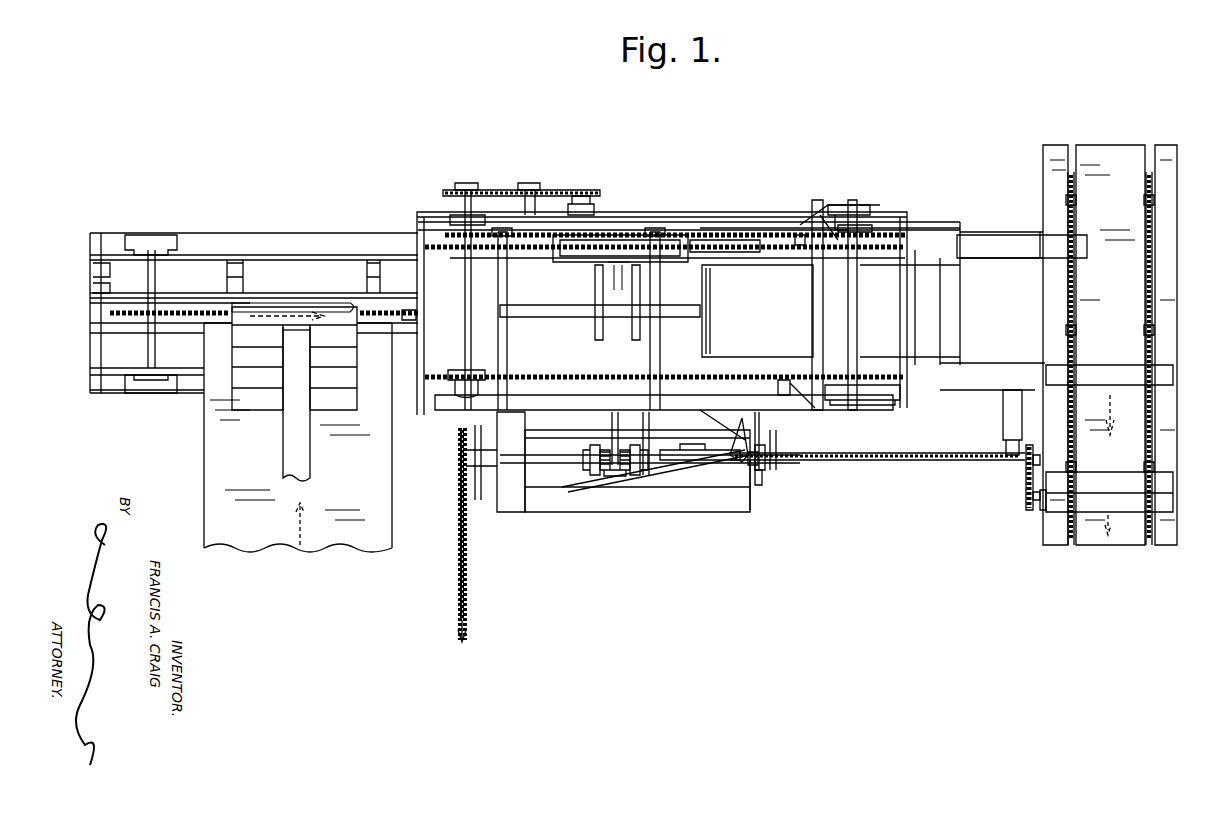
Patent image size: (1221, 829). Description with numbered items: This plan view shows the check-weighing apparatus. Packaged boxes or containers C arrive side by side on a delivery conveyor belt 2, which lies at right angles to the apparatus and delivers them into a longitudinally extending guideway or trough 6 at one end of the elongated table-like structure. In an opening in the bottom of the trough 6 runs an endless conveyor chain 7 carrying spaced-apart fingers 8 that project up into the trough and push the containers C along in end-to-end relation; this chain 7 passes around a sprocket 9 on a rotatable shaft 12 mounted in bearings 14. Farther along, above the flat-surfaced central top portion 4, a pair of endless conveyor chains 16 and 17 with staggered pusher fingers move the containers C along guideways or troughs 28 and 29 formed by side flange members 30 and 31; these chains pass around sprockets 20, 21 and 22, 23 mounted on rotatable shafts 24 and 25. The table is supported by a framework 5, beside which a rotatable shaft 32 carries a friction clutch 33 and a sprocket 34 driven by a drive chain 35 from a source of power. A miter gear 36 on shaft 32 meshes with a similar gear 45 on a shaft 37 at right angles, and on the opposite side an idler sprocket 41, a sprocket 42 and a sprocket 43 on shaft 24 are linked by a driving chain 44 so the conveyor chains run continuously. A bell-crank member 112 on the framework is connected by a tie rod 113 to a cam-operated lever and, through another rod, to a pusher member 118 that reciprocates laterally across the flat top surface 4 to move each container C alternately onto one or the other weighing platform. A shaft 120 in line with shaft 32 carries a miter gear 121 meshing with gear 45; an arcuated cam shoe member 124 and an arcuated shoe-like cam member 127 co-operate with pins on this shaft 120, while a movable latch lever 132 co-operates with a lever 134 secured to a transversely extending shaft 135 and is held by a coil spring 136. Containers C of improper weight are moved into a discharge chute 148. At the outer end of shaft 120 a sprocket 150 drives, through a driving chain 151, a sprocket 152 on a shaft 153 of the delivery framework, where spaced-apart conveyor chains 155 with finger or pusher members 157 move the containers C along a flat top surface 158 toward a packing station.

The delivery conveyor belt 2 is at (215, 450).
The flat-surfaced central top portion 4 is at (585, 290).
The framework 5 is at (706, 505).
The guideway or trough 6 is at (206, 323).
The endless conveyor chain 7 is at (180, 313).
The spaced-apart fingers 8 is at (230, 302).
The sprocket 9 is at (110, 300).
The rotatable shaft 12 is at (150, 272).
The bearings 14 is at (135, 238).
The endless conveyor chain 16 is at (738, 245).
The endless conveyor chain 17 is at (754, 377).
The sprocket 20 is at (450, 240).
The sprocket 21 is at (866, 240).
The sprocket 22 is at (455, 396).
The sprocket 23 is at (875, 405).
The rotatable shaft 24 is at (407, 308).
The rotatable shaft 25 is at (860, 315).
The guideway or trough 28 is at (780, 400).
The guideway or trough 29 is at (703, 240).
The side flange member 30 is at (800, 408).
The side flange member 31 is at (728, 228).
The rotatable shaft 32 is at (545, 458).
The friction clutch 33 is at (478, 480).
The sprocket 34 is at (472, 455).
The drive chain 35 is at (458, 530).
The miter gear 36 is at (592, 475).
The shaft 37 is at (612, 428).
The idler sprocket 41 is at (581, 196).
The sprocket 42 is at (530, 183).
The sprocket 43 is at (466, 183).
The driving chain 44 is at (493, 190).
The miter gear 45 is at (617, 476).
The bell-crank member 112 is at (762, 470).
The tie rod 113 is at (715, 462).
The pusher member 118 is at (618, 280).
The shaft 120 is at (907, 462).
The miter gear 121 is at (642, 478).
The arcuated cam shoe member 124 is at (757, 490).
The arcuated shoe-like cam member 127 is at (776, 452).
The movable latch lever 132 is at (762, 462).
The lever 134 is at (690, 450).
The transversely extending shaft 135 is at (650, 428).
The coil spring 136 is at (755, 412).
The discharge chute 148 is at (765, 275).
The sprocket 150 is at (1025, 475).
The driving chain 151 is at (1027, 490).
The sprocket 152 is at (1035, 500).
The shaft 153 is at (1042, 505).
The conveyor chains 155 is at (1130, 346).
The finger or pusher members 157 is at (1147, 200).
The flat top surface 158 is at (1135, 248).
The boxes or containers C is at (245, 398).